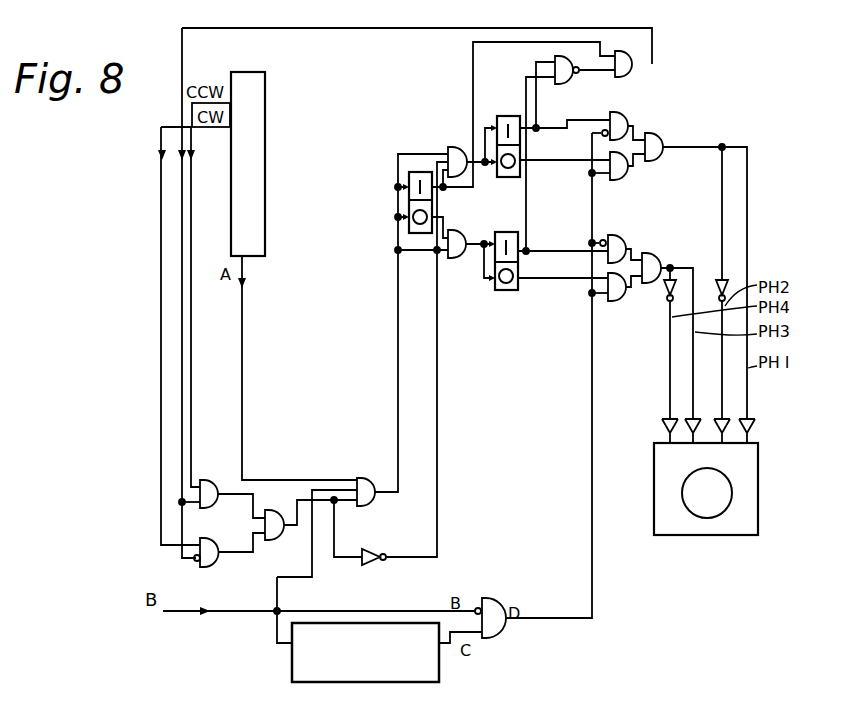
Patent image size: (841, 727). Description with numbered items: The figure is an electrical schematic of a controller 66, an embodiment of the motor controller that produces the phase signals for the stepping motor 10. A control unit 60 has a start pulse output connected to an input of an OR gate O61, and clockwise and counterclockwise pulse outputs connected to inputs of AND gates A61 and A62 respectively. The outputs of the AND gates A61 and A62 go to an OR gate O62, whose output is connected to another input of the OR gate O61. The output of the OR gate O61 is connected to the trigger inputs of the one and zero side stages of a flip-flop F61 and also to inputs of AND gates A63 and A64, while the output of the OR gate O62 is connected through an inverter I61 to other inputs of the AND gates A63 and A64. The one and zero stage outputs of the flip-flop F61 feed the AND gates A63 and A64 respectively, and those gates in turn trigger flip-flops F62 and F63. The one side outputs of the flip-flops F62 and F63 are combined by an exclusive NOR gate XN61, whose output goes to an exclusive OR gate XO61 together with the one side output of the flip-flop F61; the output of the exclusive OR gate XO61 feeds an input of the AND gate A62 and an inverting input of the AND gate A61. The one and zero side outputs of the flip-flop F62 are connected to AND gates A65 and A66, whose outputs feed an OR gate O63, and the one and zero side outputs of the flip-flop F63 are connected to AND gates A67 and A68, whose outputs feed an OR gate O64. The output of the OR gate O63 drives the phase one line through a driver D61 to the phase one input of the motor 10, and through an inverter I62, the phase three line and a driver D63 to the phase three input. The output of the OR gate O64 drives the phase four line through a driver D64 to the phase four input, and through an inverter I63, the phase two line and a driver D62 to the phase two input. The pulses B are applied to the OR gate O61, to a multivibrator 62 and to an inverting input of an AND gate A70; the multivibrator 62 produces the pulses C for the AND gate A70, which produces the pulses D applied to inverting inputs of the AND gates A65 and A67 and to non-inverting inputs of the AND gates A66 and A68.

The controller 66 is at (106, 284).
The control unit 60 is at (266, 172).
The multivibrator 62 is at (439, 670).
The motor 10 is at (758, 499).
The AND gate A61 is at (212, 539).
The AND gate A62 is at (208, 480).
The AND gate A63 is at (450, 147).
The AND gate A64 is at (458, 230).
The AND gate A65 is at (624, 114).
The AND gate A66 is at (627, 176).
The AND gate A67 is at (617, 236).
The AND gate A68 is at (613, 302).
The AND gate A70 is at (498, 634).
The OR gate O61 is at (362, 472).
The OR gate O62 is at (277, 510).
The OR gate O63 is at (662, 139).
The OR gate O64 is at (652, 254).
The flip-flop F61 is at (418, 172).
The flip-flop F62 is at (507, 116).
The flip-flop F63 is at (503, 290).
The inverter I61 is at (370, 550).
The inverter I62 is at (725, 278).
The inverter I63 is at (667, 288).
The exclusive NOR gate XN61 is at (572, 74).
The exclusive OR gate XO61 is at (633, 70).
The driver D61 is at (752, 422).
The driver D62 is at (663, 418).
The driver D63 is at (727, 420).
The driver D64 is at (697, 416).